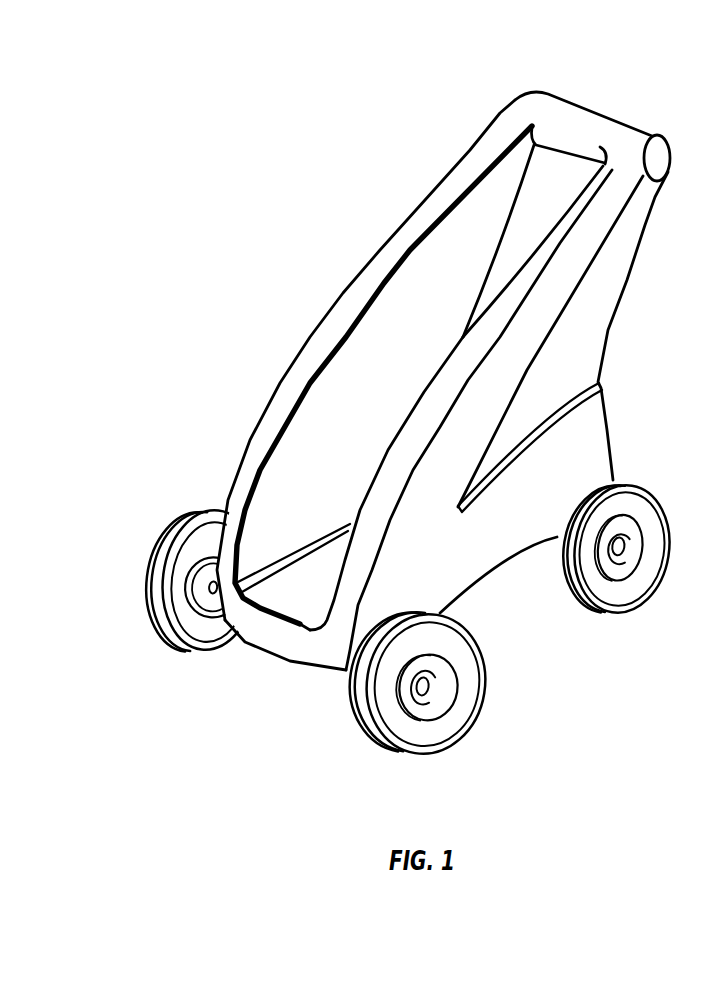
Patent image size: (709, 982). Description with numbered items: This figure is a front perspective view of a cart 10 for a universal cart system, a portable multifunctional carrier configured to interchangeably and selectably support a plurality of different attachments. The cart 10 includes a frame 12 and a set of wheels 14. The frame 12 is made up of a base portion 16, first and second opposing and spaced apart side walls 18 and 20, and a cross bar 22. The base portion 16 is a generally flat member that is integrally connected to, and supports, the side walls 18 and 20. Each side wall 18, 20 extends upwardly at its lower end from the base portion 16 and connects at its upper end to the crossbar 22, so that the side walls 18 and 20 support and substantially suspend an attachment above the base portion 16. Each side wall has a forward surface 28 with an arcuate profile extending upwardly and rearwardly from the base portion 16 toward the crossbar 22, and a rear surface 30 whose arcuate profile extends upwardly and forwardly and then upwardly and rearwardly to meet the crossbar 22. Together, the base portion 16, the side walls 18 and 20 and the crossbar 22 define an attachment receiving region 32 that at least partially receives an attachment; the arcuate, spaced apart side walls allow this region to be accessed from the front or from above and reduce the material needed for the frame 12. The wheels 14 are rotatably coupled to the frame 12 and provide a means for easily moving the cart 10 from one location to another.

The cart 10 is at (327, 88).
The frame 12 is at (351, 288).
The wheels 14 is at (630, 484).
The base portion 16 is at (300, 613).
The first side wall 18 is at (290, 390).
The second side wall 20 is at (556, 307).
The cross bar 22 is at (590, 112).
The forward surface 28 is at (325, 340).
The rear surface 30 is at (617, 278).
The attachment receiving region 32 is at (307, 473).